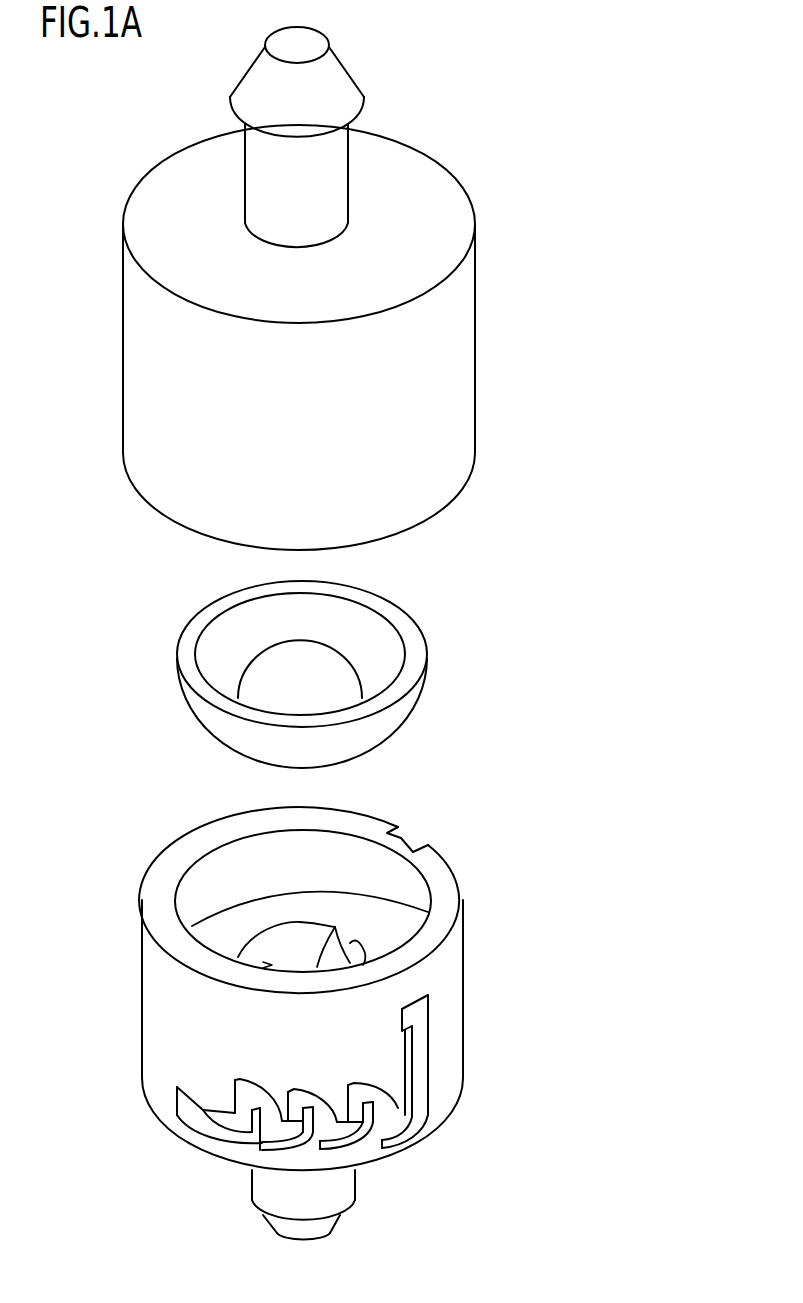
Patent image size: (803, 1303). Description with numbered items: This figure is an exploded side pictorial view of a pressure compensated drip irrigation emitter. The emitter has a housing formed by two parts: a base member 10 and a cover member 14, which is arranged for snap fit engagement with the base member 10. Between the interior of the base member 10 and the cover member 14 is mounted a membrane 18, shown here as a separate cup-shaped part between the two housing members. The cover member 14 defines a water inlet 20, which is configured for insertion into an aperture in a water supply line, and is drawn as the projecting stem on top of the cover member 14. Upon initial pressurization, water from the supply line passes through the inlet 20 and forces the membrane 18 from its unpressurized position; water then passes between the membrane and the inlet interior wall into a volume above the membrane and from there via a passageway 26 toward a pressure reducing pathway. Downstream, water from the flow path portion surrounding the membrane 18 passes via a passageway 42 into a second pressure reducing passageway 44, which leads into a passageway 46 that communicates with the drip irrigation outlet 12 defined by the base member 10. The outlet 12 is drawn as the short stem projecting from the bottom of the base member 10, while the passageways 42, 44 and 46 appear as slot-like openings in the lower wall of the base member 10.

The base member 10 is at (95, 933).
The drip irrigation outlet 12 is at (272, 1188).
The cover member 14 is at (538, 262).
The membrane 18 is at (453, 635).
The water inlet 20 is at (325, 162).
The passageway 26 is at (410, 840).
The passageway 42 is at (408, 1015).
The second pressure reducing passageway 44 is at (337, 1127).
The passageway 46 is at (200, 1105).